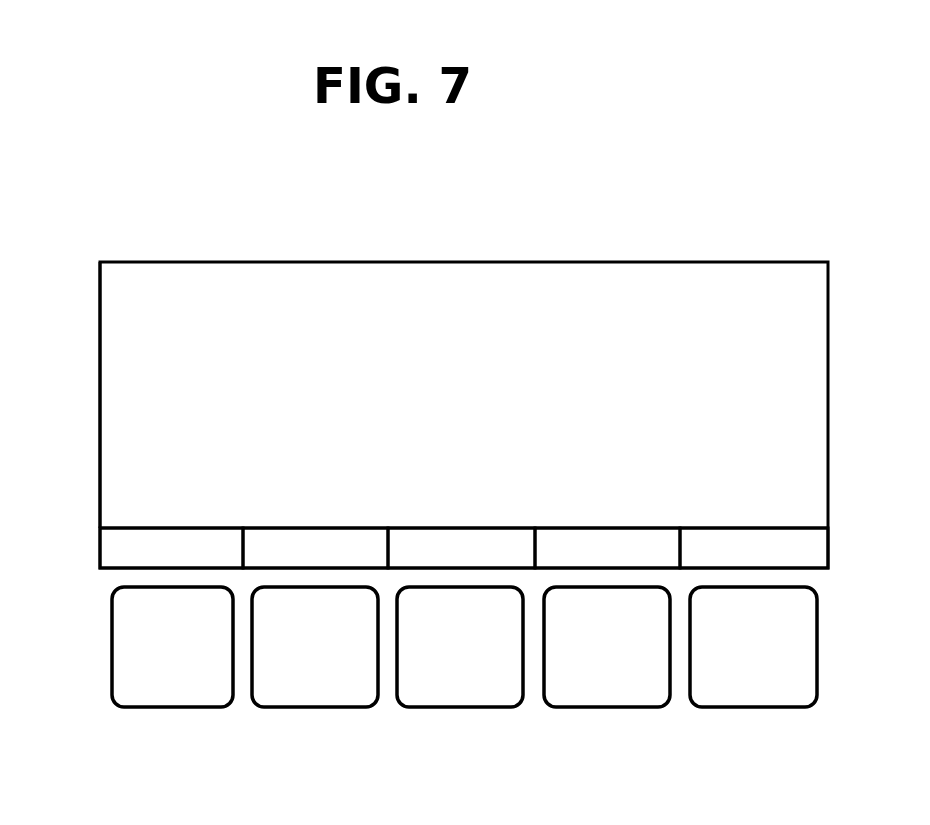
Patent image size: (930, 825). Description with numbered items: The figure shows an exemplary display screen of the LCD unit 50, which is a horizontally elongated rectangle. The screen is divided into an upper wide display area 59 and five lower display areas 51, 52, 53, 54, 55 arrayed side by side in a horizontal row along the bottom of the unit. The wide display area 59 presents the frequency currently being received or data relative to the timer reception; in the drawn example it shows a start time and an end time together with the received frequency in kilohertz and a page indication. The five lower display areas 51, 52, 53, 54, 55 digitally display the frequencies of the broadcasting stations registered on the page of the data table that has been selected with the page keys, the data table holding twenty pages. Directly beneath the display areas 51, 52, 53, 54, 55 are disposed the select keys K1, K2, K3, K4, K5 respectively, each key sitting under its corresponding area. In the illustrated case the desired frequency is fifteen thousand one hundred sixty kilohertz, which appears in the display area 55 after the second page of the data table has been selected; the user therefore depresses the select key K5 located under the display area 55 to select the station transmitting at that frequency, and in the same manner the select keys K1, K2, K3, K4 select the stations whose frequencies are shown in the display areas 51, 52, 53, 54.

The LCD unit 50 is at (347, 262).
The upper wide display area 59 is at (116, 498).
The display area 51 is at (123, 557).
The display area 52 is at (265, 560).
The display area 53 is at (410, 553).
The display area 54 is at (555, 560).
The display area 55 is at (815, 560).
The select key K1 is at (137, 697).
The select key K2 is at (325, 697).
The select key K3 is at (485, 700).
The select key K4 is at (638, 693).
The select key K5 is at (718, 697).